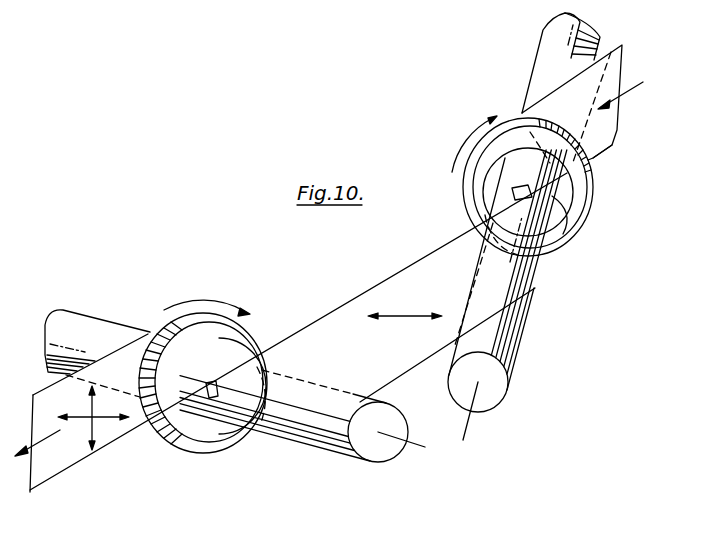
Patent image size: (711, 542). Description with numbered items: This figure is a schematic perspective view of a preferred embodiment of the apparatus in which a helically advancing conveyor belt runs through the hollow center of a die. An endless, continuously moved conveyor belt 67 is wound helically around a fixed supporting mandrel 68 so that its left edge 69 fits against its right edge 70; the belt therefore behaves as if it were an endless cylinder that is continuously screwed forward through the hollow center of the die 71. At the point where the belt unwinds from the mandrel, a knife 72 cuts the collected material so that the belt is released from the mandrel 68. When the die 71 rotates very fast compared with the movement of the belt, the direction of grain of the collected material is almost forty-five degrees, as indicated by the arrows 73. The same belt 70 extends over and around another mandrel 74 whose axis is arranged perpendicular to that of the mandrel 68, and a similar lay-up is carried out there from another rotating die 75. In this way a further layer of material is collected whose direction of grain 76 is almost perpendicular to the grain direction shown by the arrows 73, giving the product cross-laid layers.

The conveyor belt 67 is at (603, 56).
The supporting mandrel 68 is at (534, 82).
The left edge of belt 69 is at (601, 153).
The right edge of belt 70 is at (456, 238).
The die 71 is at (578, 230).
The knife 72 is at (514, 186).
The arrows indicating direction of grain 73 is at (97, 413).
The another mandrel 74 is at (86, 314).
The another rotating die 75 is at (248, 330).
The direction of grain of second layer 76 is at (92, 428).